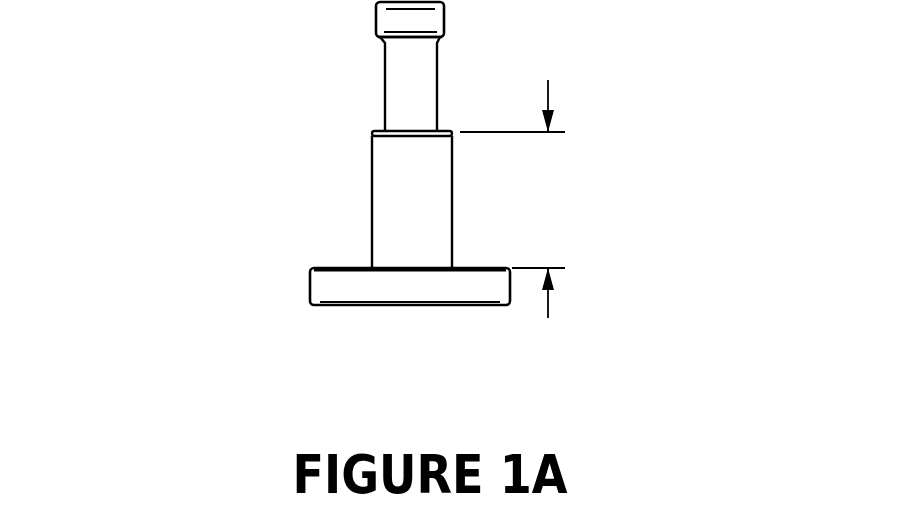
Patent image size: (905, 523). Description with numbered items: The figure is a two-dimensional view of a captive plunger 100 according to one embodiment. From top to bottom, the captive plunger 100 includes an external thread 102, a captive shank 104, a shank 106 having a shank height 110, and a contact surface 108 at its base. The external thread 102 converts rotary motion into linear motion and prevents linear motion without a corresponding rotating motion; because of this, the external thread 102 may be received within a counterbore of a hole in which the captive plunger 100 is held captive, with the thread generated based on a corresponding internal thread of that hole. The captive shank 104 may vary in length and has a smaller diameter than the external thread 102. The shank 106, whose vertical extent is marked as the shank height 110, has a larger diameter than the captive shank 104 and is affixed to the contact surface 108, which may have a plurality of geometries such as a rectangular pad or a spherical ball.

The captive plunger 100 is at (416, 204).
The external thread 102 is at (375, 24).
The captive shank 104 is at (385, 93).
The shank 106 is at (372, 207).
The contact surface 108 is at (303, 300).
The shank height 110 is at (535, 199).